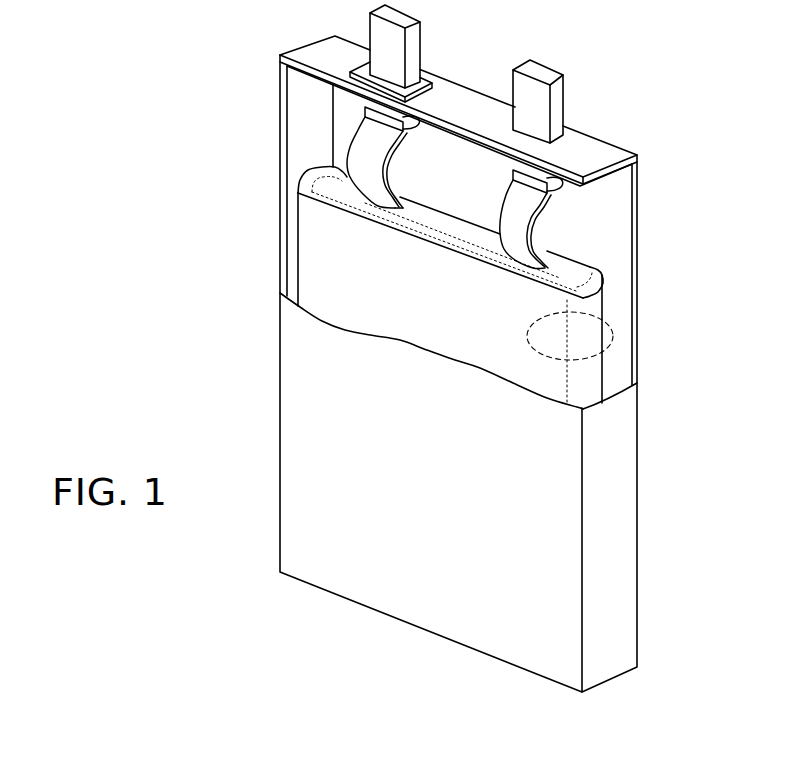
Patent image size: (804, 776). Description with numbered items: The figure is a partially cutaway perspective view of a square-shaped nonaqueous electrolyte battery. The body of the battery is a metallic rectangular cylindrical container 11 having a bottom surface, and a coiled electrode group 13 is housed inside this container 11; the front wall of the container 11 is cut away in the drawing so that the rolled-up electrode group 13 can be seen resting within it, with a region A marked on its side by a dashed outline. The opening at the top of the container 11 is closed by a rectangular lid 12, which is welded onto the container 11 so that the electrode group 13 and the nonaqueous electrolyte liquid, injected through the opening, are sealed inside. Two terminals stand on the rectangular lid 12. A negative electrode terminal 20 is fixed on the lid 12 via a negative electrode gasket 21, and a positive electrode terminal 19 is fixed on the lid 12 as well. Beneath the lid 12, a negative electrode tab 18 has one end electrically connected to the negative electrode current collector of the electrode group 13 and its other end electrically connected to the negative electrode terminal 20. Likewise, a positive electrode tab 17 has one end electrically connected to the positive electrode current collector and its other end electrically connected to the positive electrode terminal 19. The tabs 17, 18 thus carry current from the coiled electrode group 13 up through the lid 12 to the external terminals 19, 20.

The container 11 is at (617, 506).
The rectangular lid 12 is at (578, 145).
The coiled electrode group 13 is at (616, 296).
The positive electrode tab 17 is at (517, 225).
The negative electrode tab 18 is at (372, 163).
The positive electrode terminal 19 is at (558, 98).
The negative electrode terminal 20 is at (415, 40).
The negative electrode gasket 21 is at (436, 78).
The region A is at (630, 327).